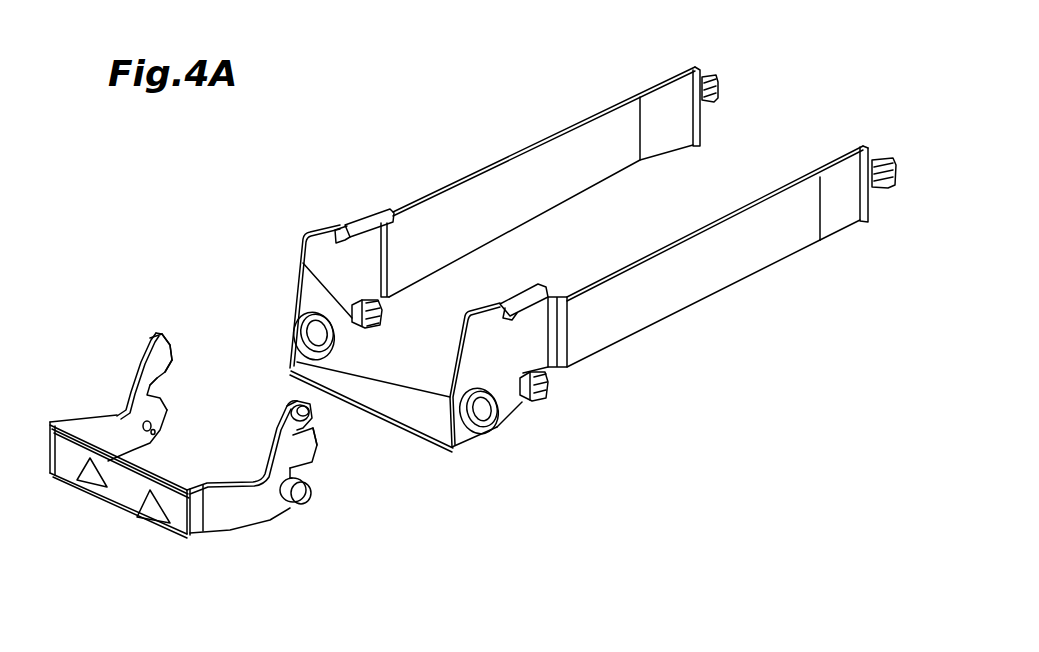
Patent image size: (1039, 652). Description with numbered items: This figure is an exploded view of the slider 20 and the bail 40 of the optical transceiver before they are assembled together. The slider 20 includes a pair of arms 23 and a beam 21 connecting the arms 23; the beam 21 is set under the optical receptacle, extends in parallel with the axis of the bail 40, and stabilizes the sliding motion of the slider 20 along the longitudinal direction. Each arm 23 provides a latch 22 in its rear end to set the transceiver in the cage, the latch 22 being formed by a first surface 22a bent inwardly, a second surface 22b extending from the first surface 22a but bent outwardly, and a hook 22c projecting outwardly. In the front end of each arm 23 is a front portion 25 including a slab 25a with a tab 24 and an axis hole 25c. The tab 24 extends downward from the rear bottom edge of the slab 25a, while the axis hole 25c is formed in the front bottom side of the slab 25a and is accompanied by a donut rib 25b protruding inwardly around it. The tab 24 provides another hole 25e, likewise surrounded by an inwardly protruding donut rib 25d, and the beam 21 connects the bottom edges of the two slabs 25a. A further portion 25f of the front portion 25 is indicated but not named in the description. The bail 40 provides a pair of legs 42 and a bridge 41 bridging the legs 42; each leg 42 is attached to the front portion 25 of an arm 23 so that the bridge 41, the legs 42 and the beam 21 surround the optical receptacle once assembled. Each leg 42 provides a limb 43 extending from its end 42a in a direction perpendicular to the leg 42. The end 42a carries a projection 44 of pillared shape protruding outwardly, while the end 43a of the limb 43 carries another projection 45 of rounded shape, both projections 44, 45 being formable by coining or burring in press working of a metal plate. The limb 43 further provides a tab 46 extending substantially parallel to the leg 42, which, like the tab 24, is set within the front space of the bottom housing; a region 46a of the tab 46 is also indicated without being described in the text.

The slider 20 is at (545, 134).
The beam 21 is at (432, 428).
The latch 22 is at (663, 79).
The first surface 22a is at (834, 223).
The second surface 22b is at (865, 146).
The hook 22c is at (708, 79).
The arm 23 is at (700, 292).
The tab 24 is at (360, 324).
The front portion 25 is at (368, 165).
The slab 25a is at (320, 243).
The donut rib 25b is at (294, 318).
The axis hole 25c is at (293, 334).
The donut rib 25d is at (390, 294).
The other hole 25e is at (383, 320).
The bent portion 25f is at (302, 262).
The bail 40 is at (87, 546).
The bridge 41 is at (117, 507).
The leg 42 is at (83, 413).
The end of the leg 42a is at (162, 425).
The limb 43 is at (162, 380).
The end of the limb 43a is at (148, 334).
The projection 44 is at (302, 508).
The projection 45 is at (288, 417).
The tab 46 is at (160, 362).
The hook tab 46a is at (142, 352).